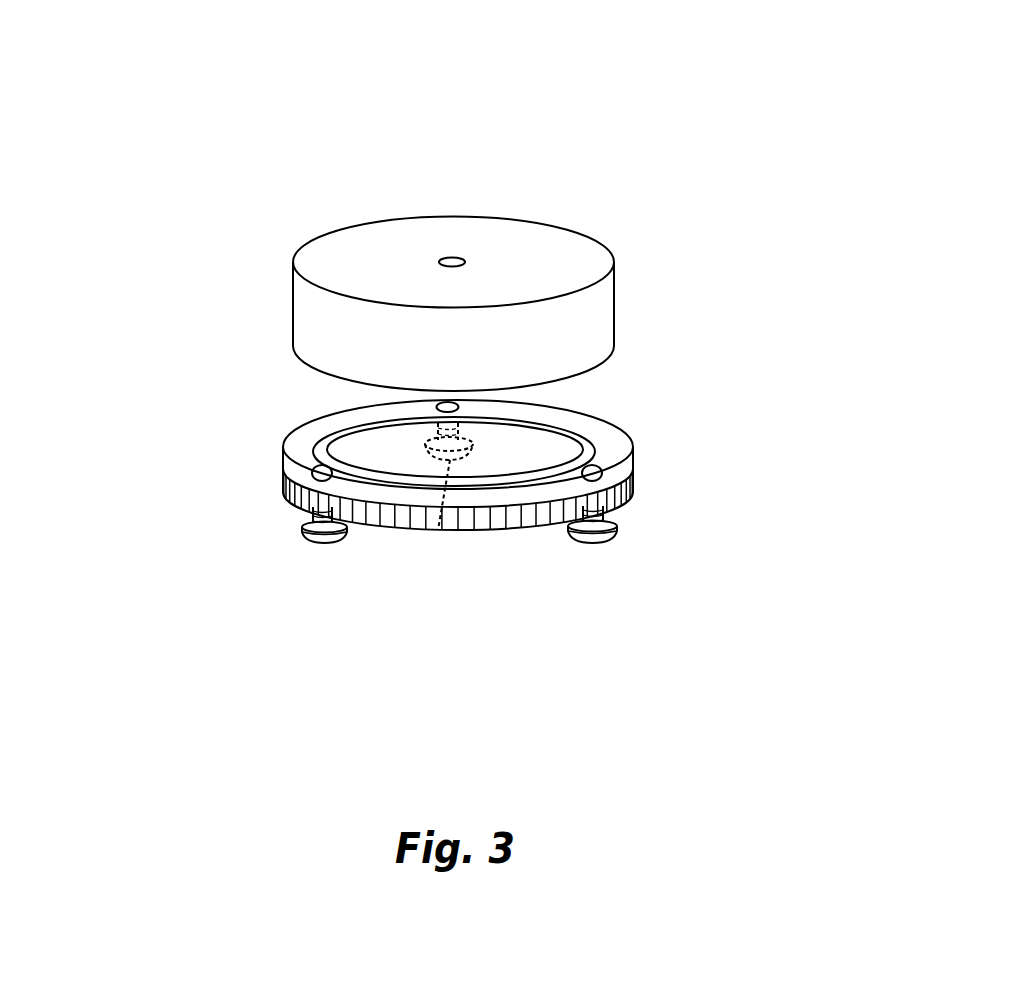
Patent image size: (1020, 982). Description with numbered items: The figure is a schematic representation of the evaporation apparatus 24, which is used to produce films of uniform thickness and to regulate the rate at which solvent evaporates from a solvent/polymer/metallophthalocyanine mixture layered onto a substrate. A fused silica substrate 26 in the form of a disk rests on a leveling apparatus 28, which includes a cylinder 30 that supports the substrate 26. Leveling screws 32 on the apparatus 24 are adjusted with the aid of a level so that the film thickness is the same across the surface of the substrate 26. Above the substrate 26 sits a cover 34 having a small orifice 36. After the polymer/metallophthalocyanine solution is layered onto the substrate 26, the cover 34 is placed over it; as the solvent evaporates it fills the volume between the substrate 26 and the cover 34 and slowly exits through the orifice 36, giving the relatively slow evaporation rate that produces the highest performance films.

The evaporation apparatus 24 is at (528, 108).
The fused silica substrate 26 is at (550, 452).
The leveling apparatus 28 is at (292, 437).
The cylinder 30 is at (295, 496).
The leveling screws 32 is at (577, 538).
The cover 34 is at (614, 313).
The orifice 36 is at (453, 258).